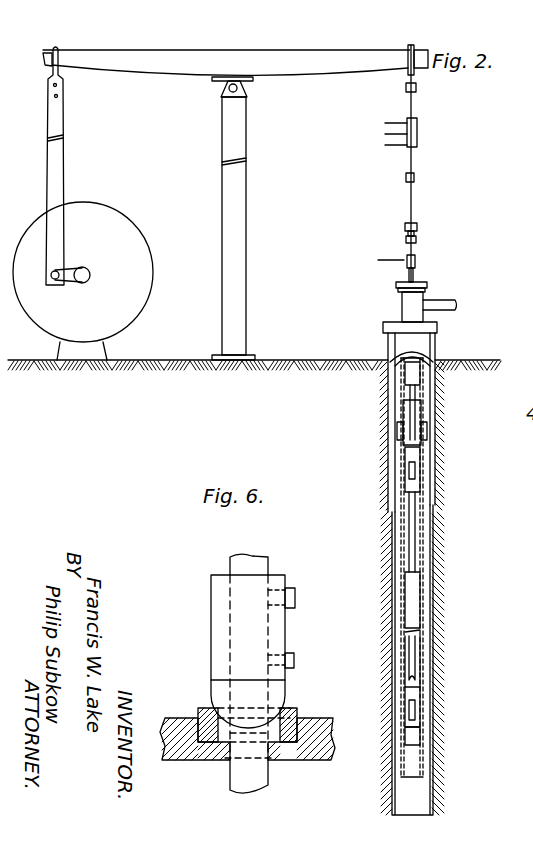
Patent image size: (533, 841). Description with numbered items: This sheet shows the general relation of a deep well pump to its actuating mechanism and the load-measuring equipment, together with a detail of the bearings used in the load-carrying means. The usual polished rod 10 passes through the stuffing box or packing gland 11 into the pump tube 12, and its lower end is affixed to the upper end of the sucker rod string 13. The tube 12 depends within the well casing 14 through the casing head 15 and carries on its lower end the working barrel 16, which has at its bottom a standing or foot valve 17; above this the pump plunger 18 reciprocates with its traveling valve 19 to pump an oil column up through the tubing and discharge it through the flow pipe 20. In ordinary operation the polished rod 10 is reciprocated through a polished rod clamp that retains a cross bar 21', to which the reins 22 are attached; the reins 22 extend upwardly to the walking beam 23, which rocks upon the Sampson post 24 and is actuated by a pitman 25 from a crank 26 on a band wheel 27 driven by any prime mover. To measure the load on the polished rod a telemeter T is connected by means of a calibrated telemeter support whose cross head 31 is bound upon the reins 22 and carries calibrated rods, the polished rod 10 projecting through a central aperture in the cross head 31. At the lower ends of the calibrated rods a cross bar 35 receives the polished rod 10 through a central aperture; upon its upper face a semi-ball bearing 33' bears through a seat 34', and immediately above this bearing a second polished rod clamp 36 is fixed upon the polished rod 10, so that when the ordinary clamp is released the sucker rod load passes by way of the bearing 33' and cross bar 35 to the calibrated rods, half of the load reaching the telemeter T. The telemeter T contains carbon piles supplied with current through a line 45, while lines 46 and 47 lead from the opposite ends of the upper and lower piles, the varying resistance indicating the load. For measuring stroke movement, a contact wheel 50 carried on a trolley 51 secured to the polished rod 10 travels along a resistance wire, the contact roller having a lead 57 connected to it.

In FIG. 2, the polished rod 10 is at (414, 191).
In FIG. 6, the polished rod 10 is at (260, 567).
In FIG. 2, the stuffing box or packing gland 11 is at (398, 285).
In FIG. 2, the pump tube 12 is at (402, 400).
In FIG. 2, the sucker rod string 13 is at (417, 417).
In FIG. 2, the well casing 14 is at (437, 570).
In FIG. 2, the casing head 15 is at (438, 327).
In FIG. 2, the working barrel 16 is at (420, 600).
In FIG. 2, the standing or foot valve 17 is at (412, 713).
In FIG. 2, the pump plunger 18 is at (408, 542).
In FIG. 2, the traveling valve 19 is at (415, 475).
In FIG. 2, the flow pipe 20 is at (445, 300).
In FIG. 2, the cross bar 21' is at (442, 231).
In FIG. 2, the reins 22 is at (417, 211).
In FIG. 2, the walking beam 23 is at (297, 64).
In FIG. 2, the Sampson post 24 is at (238, 252).
In FIG. 2, the pitman 25 is at (55, 168).
In FIG. 2, the crank 26 is at (70, 266).
In FIG. 2, the band wheel 27 is at (147, 276).
In FIG. 2, the cross head 31 is at (416, 88).
In FIG. 6, the semi-ball bearing 33' is at (309, 680).
In FIG. 6, the seat 34' is at (277, 718).
In FIG. 2, the cross bar (second cross member) 35 is at (416, 178).
In FIG. 6, the cross bar (second cross member) 35 is at (318, 760).
In FIG. 6, the second polished rod clamp 36 is at (253, 651).
In FIG. 2, the line 45 is at (388, 134).
In FIG. 2, the line 46 is at (388, 122).
In FIG. 2, the line 47 is at (397, 146).
In FIG. 2, the contact wheel 50 is at (417, 268).
In FIG. 2, the trolley 51 is at (418, 250).
In FIG. 2, the lead 57 is at (378, 260).
In FIG. 2, the telemeter T is at (424, 137).